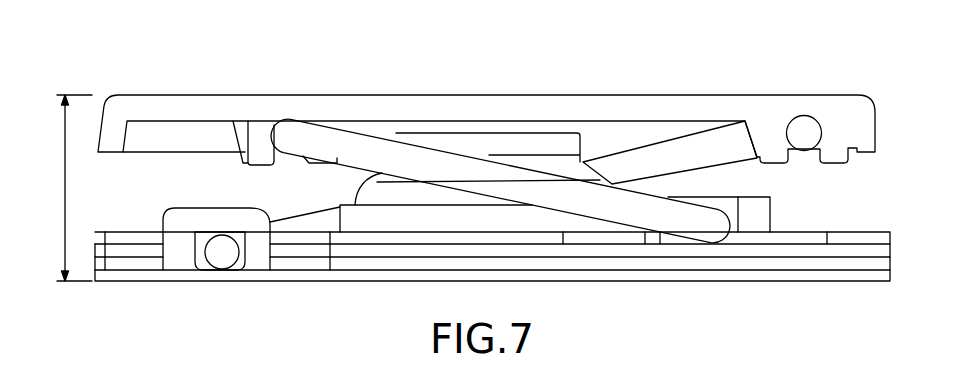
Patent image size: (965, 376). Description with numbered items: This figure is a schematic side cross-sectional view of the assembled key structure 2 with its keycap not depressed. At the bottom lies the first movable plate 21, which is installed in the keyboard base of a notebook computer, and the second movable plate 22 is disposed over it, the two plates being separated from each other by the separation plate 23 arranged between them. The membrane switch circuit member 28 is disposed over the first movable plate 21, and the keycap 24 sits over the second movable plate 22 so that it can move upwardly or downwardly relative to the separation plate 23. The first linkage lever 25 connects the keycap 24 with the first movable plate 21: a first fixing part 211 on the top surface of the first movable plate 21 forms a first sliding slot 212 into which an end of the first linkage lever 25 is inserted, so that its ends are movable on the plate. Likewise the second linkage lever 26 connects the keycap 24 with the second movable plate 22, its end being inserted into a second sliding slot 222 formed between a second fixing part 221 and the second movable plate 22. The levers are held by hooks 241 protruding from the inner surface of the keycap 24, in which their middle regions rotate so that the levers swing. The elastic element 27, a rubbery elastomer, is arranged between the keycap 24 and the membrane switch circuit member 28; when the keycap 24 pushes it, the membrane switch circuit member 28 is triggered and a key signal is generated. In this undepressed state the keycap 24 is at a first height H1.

The key structure 2 is at (203, 36).
The first movable plate 21 is at (298, 278).
The second movable plate 22 is at (836, 251).
The separation plate 23 is at (672, 262).
The keycap 24 is at (650, 97).
The first linkage lever 25 is at (681, 152).
The second linkage lever 26 is at (410, 152).
The elastic element 27 is at (513, 145).
The membrane switch circuit member 28 is at (870, 238).
The first fixing part 211 is at (202, 220).
The first sliding slot 212 is at (196, 271).
The second fixing part 221 is at (755, 210).
The second sliding slot 222 is at (742, 222).
The hook 241 is at (836, 150).
The first height H1 is at (62, 188).